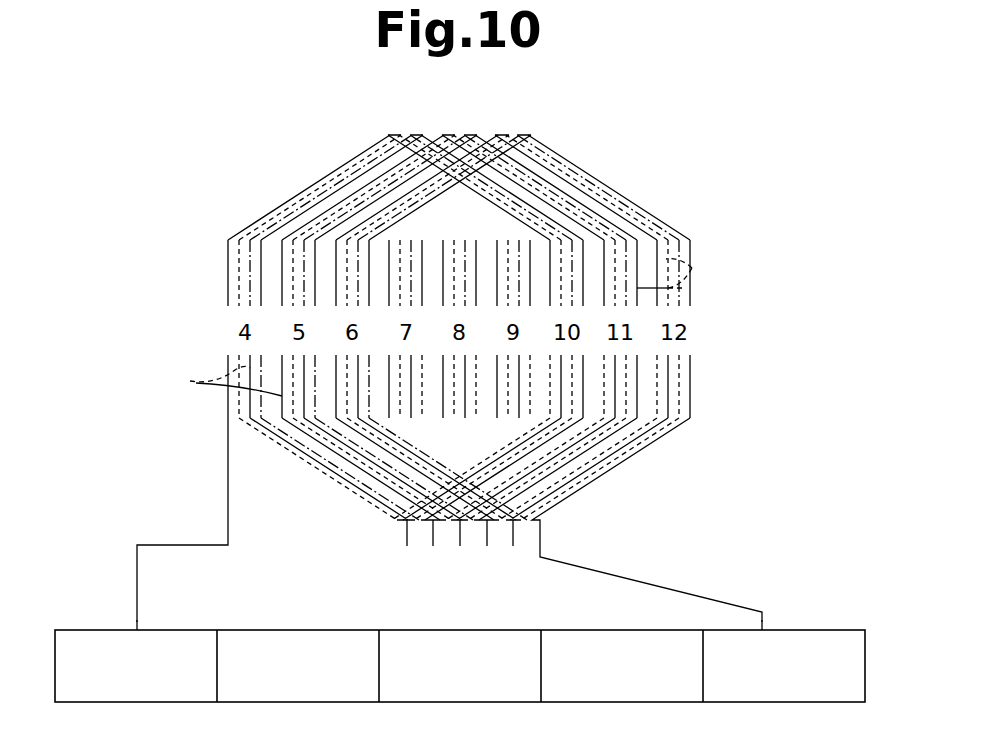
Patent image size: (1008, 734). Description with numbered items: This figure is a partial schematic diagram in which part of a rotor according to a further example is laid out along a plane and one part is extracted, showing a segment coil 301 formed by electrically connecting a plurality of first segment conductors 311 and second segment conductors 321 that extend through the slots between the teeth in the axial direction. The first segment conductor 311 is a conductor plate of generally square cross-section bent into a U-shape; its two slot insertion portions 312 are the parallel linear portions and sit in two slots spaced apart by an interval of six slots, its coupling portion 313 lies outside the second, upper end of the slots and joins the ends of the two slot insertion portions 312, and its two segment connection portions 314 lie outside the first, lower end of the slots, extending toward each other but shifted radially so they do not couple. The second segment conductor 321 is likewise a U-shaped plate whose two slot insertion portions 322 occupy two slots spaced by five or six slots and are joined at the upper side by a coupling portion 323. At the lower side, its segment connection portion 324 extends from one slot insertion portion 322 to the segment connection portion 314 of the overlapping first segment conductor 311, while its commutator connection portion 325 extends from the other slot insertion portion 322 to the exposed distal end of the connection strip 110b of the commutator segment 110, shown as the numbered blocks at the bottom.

The segment coil 301 is at (560, 134).
The first segment conductor 311 is at (566, 172).
The slot insertion portion 312 is at (739, 268).
The coupling portion 313 is at (343, 178).
The segment connection portion 314 is at (372, 522).
The second segment conductor 321 is at (230, 238).
The slot insertion portion 322 is at (228, 283).
The coupling portion 323 is at (430, 133).
The segment connection portion 324 is at (424, 530).
The commutator connection portion 325 is at (228, 496).
The commutator segment 110 is at (818, 630).
The connection strip 110b is at (140, 626).